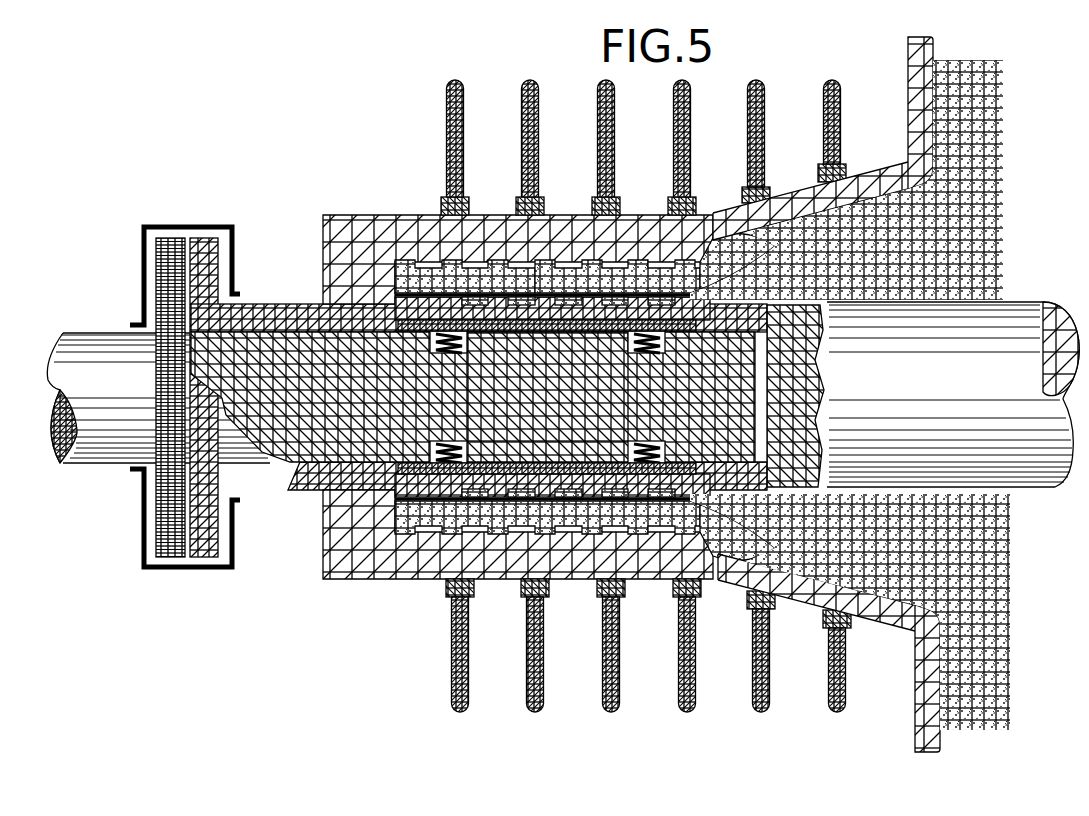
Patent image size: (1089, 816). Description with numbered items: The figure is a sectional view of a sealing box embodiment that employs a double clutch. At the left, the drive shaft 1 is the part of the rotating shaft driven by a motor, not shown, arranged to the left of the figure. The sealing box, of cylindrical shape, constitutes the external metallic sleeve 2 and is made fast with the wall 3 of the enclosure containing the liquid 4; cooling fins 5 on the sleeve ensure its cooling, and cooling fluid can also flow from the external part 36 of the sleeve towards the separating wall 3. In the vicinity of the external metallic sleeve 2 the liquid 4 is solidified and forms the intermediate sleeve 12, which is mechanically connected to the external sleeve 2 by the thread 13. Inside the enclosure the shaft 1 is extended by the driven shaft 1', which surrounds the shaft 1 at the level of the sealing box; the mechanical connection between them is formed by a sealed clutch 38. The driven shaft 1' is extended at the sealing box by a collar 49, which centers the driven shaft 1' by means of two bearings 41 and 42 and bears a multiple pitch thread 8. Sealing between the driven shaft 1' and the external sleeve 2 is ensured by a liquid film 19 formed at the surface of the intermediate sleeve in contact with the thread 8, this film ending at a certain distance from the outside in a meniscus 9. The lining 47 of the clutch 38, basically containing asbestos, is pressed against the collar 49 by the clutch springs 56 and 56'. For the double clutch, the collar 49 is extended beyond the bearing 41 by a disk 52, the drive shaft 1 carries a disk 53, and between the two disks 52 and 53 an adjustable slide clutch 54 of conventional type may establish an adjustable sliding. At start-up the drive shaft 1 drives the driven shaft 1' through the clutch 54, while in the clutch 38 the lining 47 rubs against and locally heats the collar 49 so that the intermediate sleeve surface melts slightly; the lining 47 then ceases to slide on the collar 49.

The drive shaft 1 is at (158, 368).
The driven shaft 1' is at (955, 346).
The external metallic sleeve 2 is at (870, 181).
The wall 3 is at (920, 95).
The liquid 4 is at (970, 197).
The cooling fins 5 is at (532, 140).
The multiple pitch thread 8 is at (572, 293).
The meniscus 9 is at (420, 325).
The intermediate sleeve 12 is at (737, 230).
The thread 13 is at (640, 262).
The liquid film 19 is at (473, 290).
The external part of the sleeve 36 is at (325, 273).
The sealed clutch 38 is at (374, 422).
The bearing 41 is at (352, 478).
The bearing 42 is at (724, 500).
The lining 47 is at (550, 477).
The collar 49 is at (364, 322).
The disk 52 is at (205, 269).
The disk 53 is at (170, 259).
The adjustable slide clutch 54 is at (233, 252).
The clutch spring 56 is at (417, 486).
The clutch spring 56' is at (653, 492).